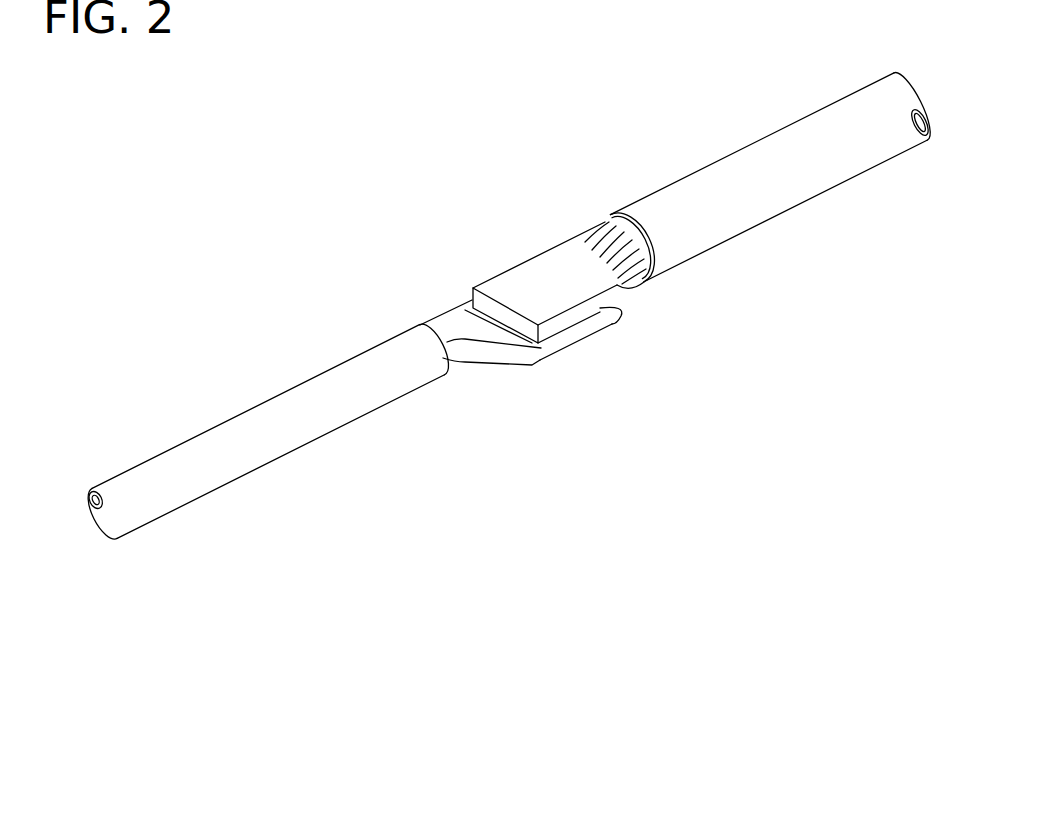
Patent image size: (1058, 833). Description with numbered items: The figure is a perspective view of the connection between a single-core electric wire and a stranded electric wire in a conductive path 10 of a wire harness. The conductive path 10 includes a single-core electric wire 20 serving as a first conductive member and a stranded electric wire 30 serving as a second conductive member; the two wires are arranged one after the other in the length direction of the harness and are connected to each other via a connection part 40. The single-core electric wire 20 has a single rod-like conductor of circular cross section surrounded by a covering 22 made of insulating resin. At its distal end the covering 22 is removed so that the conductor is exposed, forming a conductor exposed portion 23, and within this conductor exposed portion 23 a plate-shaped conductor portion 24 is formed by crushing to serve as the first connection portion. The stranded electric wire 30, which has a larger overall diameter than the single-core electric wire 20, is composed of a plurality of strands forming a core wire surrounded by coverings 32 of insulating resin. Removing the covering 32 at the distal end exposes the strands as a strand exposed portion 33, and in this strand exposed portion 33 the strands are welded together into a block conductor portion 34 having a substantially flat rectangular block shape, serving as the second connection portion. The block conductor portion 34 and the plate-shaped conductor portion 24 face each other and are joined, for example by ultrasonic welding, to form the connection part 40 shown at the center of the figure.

The conductive path 10 is at (520, 148).
The single-core electric wire 20 is at (262, 400).
The covering 22 is at (253, 457).
The conductor exposed portion 23 is at (472, 352).
The plate-shaped conductor portion 24 is at (570, 343).
The stranded electric wire 30 is at (783, 125).
The covering 32 is at (790, 193).
The strand exposed portion 33 is at (598, 223).
The block conductor portion 34 is at (598, 307).
The connection part 40 is at (617, 419).